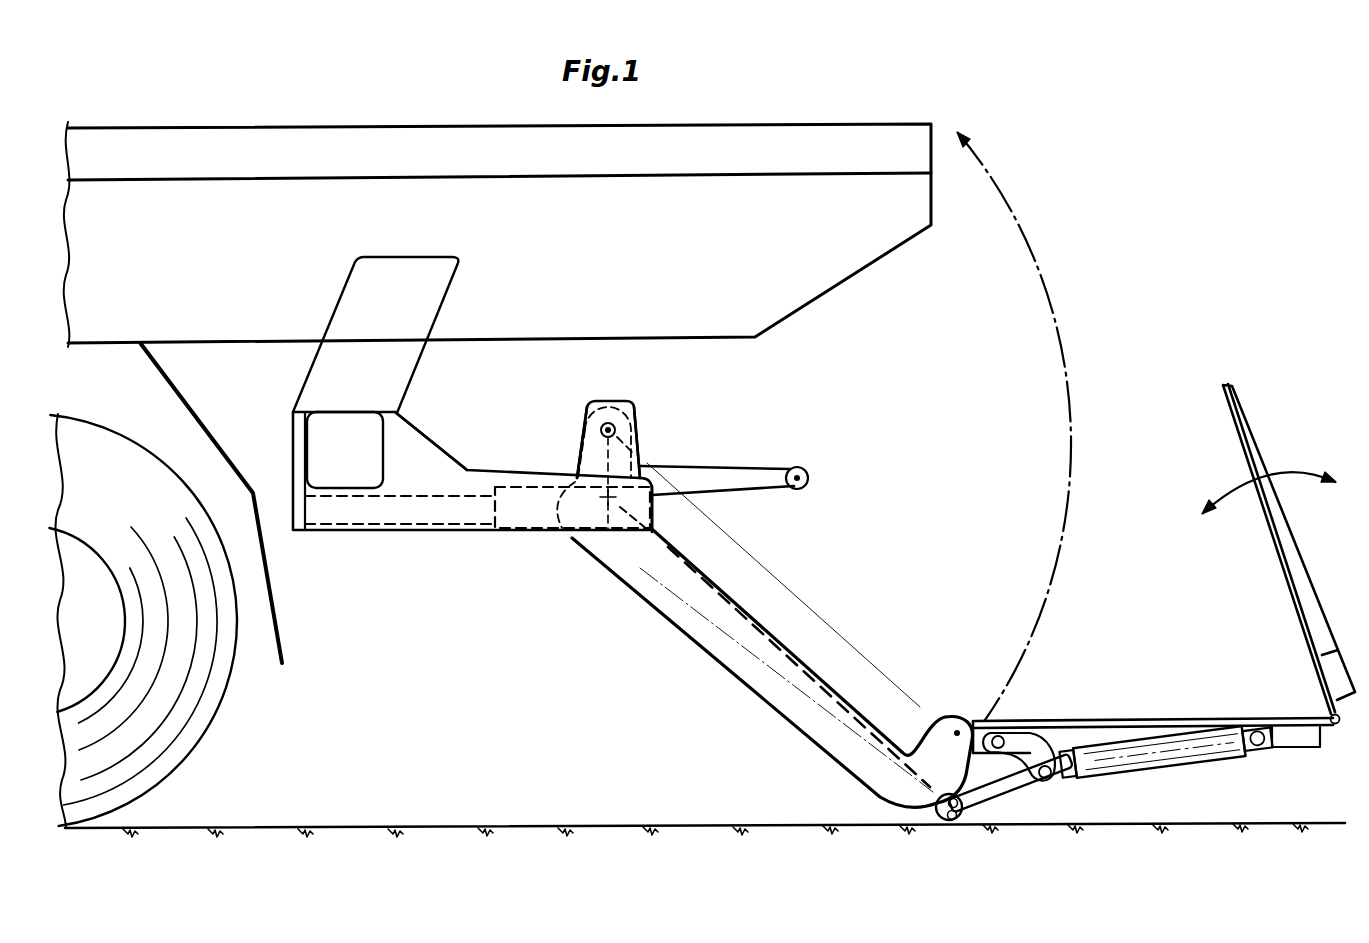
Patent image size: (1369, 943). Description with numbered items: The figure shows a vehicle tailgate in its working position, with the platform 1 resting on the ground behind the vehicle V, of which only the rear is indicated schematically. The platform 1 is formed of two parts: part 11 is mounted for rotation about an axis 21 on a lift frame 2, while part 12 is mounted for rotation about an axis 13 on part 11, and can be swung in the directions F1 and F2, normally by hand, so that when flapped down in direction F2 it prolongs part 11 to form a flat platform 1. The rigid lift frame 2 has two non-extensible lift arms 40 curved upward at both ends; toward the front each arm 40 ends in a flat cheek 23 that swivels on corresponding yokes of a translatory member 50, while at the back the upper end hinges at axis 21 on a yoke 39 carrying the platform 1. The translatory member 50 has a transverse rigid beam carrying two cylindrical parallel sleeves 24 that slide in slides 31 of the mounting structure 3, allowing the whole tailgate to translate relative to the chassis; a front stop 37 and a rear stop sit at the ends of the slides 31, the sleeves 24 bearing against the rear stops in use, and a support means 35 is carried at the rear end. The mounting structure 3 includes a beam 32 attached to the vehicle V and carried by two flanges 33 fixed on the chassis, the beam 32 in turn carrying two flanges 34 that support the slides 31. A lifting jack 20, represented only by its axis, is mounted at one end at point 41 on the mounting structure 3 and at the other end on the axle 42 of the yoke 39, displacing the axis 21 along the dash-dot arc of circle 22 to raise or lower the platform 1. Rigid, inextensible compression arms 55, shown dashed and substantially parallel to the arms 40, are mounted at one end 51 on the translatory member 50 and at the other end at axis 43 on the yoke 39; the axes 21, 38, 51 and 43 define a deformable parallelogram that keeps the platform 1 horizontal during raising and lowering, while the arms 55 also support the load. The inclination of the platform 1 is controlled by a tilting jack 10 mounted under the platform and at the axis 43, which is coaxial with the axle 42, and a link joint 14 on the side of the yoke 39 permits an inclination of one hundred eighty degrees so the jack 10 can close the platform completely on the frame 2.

The platform 1 is at (1273, 686).
The lift frame 2 is at (772, 635).
The mounting structure 3 is at (336, 535).
The tilting jack 10 is at (1097, 780).
The platform part 11 is at (1100, 720).
The platform part 12 is at (1268, 532).
The axis 13 is at (1338, 735).
The link joint 14 is at (1027, 786).
The lifting jack 20 is at (713, 630).
The axis 21 is at (957, 730).
The arc of circle 22 is at (1058, 312).
The flat cheek 23 is at (572, 472).
The sleeve 24 is at (537, 533).
The slide 31 is at (430, 533).
The beam 32 is at (312, 443).
The flange 33 is at (325, 352).
The flange 34 is at (432, 452).
The support means 35 is at (805, 470).
The front stop 37 is at (300, 533).
The axis of articulation 38 is at (614, 426).
The yoke 39 is at (990, 737).
The lift arm 40 is at (793, 722).
The mounting point 41 is at (571, 518).
The axle 42 is at (945, 815).
The axis 43 is at (952, 822).
The translatory member 50 is at (607, 397).
The end 51 is at (610, 533).
The compression arm 55 is at (740, 612).
The vehicle V is at (801, 123).
The direction of rotation F1 is at (1268, 487).
The direction of rotation F2 is at (1308, 463).